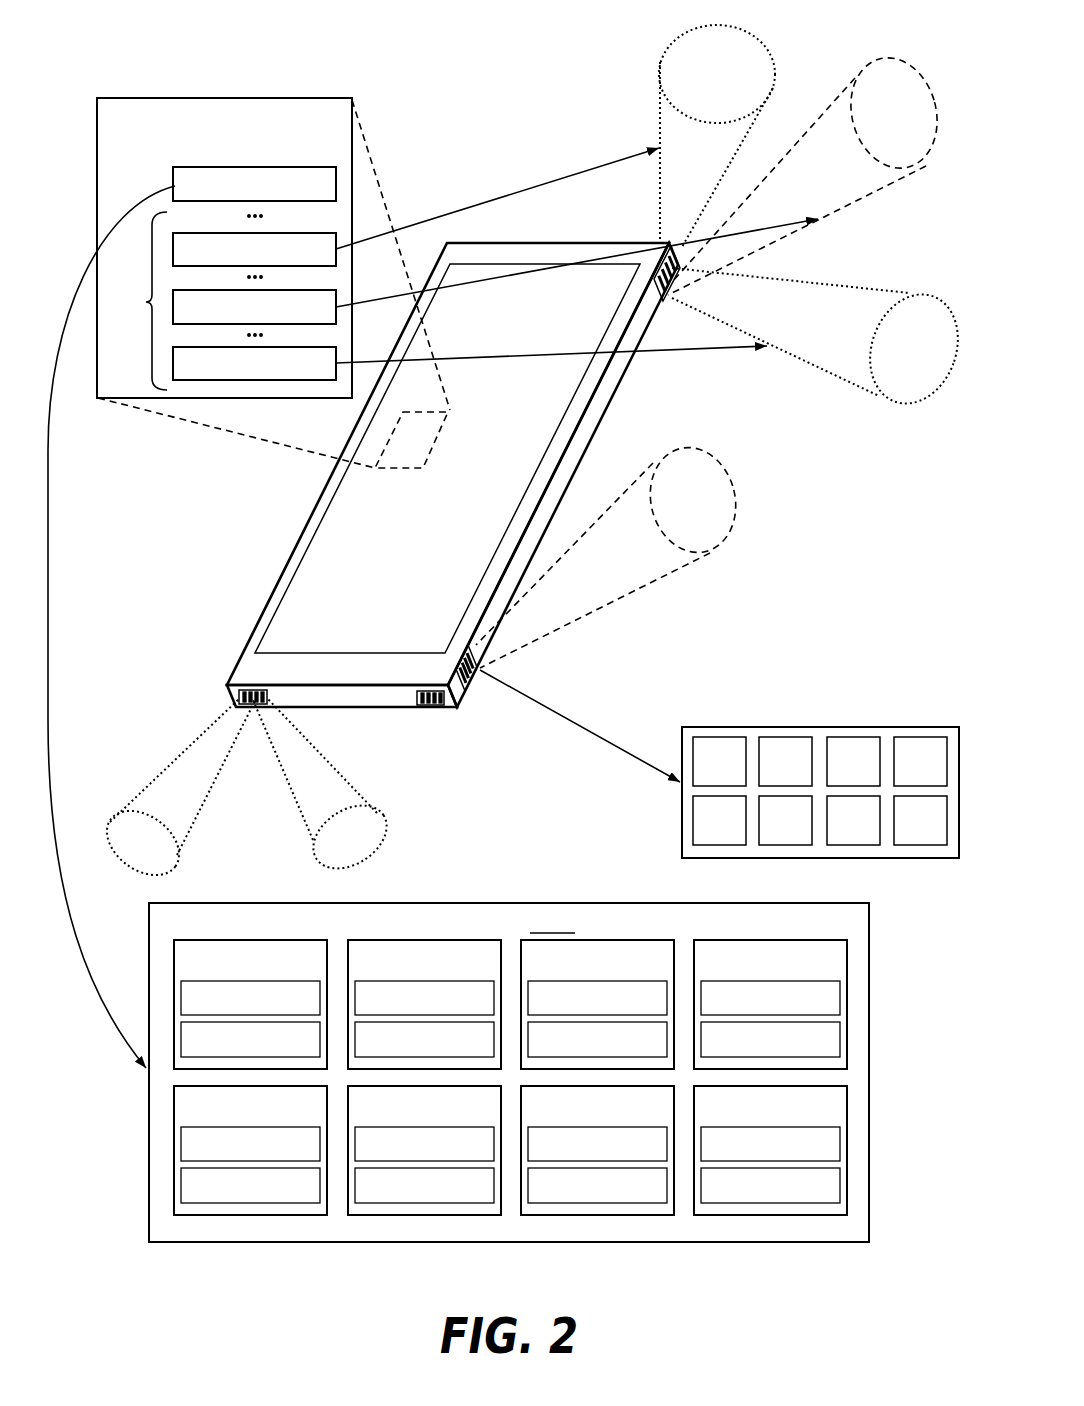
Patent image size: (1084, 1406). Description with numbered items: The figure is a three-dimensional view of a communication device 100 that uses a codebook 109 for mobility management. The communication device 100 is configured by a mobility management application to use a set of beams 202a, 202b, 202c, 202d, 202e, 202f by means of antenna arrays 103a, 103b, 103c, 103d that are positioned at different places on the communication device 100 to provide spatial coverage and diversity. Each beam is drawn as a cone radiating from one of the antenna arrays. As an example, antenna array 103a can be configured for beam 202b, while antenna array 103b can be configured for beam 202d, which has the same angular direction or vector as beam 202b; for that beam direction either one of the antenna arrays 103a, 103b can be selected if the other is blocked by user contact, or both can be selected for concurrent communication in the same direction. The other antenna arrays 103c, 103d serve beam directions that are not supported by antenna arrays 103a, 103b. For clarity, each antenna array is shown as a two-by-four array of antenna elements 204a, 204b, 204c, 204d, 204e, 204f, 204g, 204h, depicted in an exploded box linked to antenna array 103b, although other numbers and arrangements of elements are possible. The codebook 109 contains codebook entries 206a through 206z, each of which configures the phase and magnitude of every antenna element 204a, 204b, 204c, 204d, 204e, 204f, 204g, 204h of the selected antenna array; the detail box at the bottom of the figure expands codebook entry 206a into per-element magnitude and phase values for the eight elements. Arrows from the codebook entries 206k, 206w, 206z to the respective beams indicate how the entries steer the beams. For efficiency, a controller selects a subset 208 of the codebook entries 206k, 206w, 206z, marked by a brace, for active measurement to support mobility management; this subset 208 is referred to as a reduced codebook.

The communication device 100 is at (262, 577).
The codebook 109 is at (288, 131).
The antenna array 103a is at (656, 293).
The antenna array 103b is at (463, 690).
The antenna array 103c is at (426, 707).
The antenna array 103d is at (258, 704).
The beam 202a is at (660, 118).
The beam 202b is at (832, 96).
The beam 202c is at (897, 291).
The beam 202d is at (633, 482).
The beam 202e is at (338, 768).
The beam 202f is at (155, 775).
The antenna element 204a is at (719, 761).
The antenna element 204b is at (785, 761).
The antenna element 204c is at (853, 761).
The antenna element 204d is at (920, 761).
The antenna element 204e is at (719, 820).
The antenna element 204f is at (785, 820).
The antenna element 204g is at (853, 820).
The antenna element 204h is at (920, 820).
The codebook entry 206a is at (321, 196).
The codebook entry 206k is at (321, 262).
The codebook entry 206w is at (325, 319).
The codebook entry 206z is at (321, 375).
The subset of codebook entries 208 is at (137, 301).